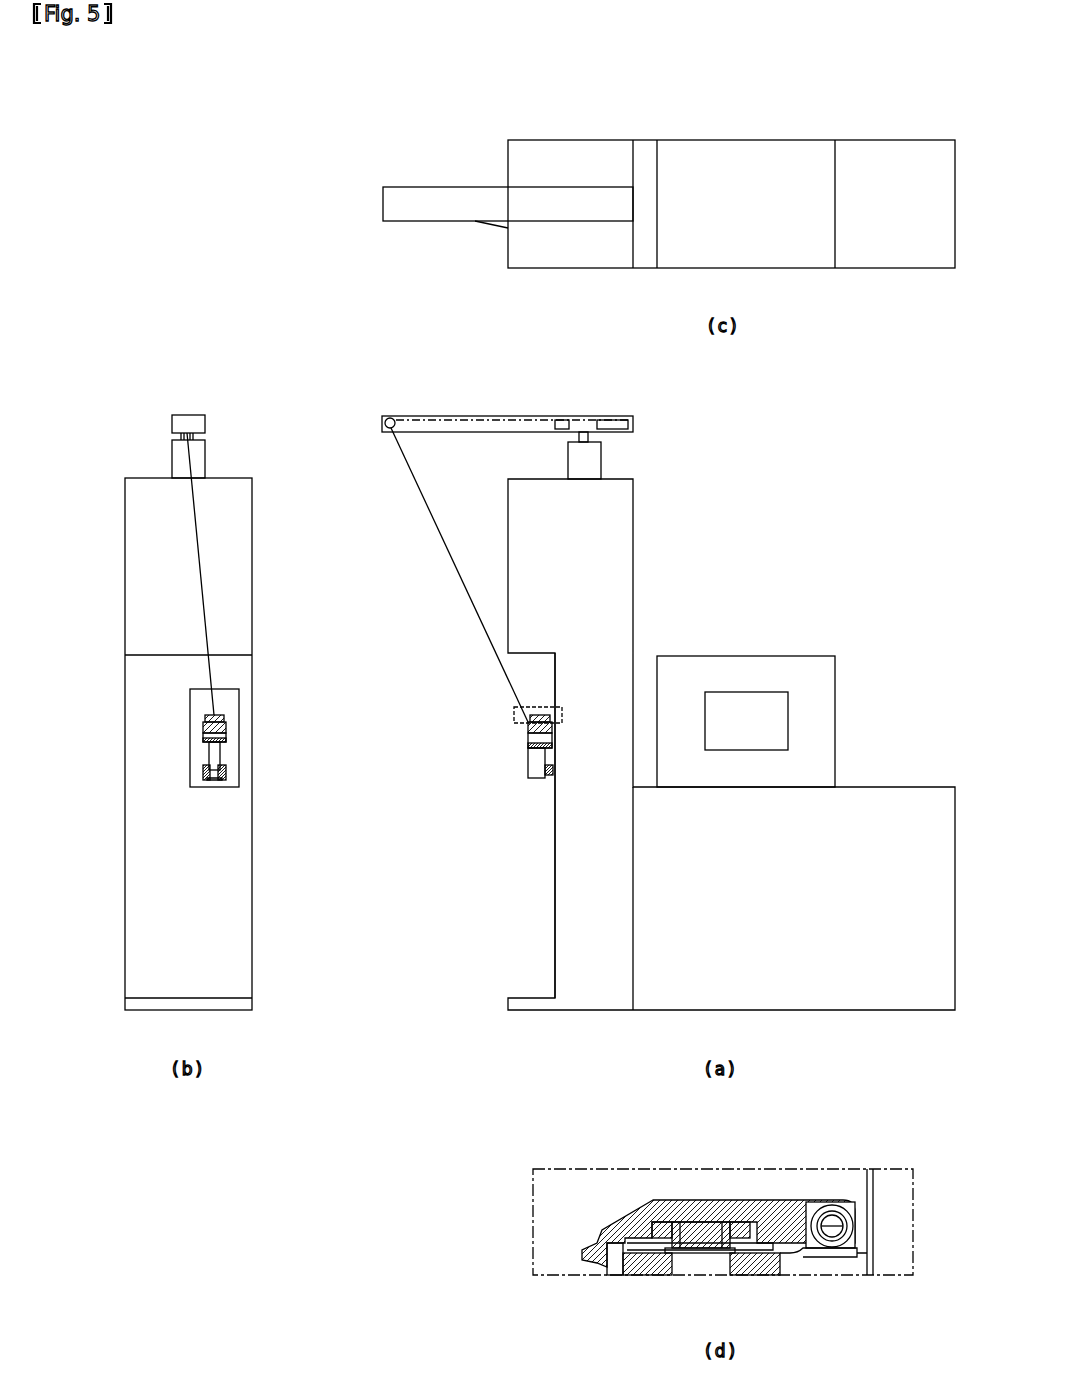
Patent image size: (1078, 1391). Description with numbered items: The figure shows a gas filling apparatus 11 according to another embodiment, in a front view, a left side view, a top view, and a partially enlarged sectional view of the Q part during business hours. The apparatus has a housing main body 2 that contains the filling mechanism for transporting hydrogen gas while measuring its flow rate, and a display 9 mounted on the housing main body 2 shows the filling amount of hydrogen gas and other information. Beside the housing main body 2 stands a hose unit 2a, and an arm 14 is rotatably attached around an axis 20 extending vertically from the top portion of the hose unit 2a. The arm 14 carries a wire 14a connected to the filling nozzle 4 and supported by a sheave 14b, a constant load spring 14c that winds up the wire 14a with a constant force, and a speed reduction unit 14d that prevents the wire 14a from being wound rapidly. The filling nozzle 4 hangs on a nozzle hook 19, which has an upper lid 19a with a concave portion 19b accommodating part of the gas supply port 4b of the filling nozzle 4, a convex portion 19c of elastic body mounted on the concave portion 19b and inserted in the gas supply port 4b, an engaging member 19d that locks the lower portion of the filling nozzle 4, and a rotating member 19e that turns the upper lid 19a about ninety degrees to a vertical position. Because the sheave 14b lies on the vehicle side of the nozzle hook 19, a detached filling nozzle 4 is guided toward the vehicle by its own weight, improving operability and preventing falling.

The gas filling apparatus 11 is at (658, 77).
The housing main body 2 is at (893, 140).
The hose unit 2a is at (633, 560).
The display 9 is at (728, 140).
The arm 14 is at (452, 187).
The wire 14a is at (199, 540).
The sheave 14b is at (390, 416).
The constant load spring 14c is at (612, 420).
The speed reduction unit 14d is at (561, 420).
The axis 20 is at (592, 436).
The filling nozzle 4 is at (227, 728).
The gas supply port 4b is at (620, 1270).
The nozzle hook 19 is at (230, 759).
The upper lid 19a is at (219, 715).
The concave portion 19b is at (703, 1250).
The convex portion 19c is at (685, 1246).
The engaging member 19d is at (228, 775).
The rotating member 19e is at (838, 1205).
The Q part Q is at (540, 707).